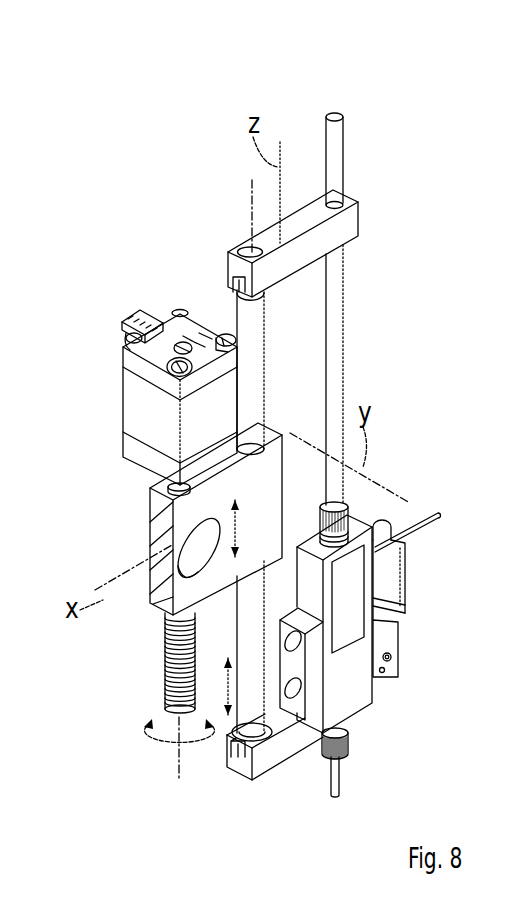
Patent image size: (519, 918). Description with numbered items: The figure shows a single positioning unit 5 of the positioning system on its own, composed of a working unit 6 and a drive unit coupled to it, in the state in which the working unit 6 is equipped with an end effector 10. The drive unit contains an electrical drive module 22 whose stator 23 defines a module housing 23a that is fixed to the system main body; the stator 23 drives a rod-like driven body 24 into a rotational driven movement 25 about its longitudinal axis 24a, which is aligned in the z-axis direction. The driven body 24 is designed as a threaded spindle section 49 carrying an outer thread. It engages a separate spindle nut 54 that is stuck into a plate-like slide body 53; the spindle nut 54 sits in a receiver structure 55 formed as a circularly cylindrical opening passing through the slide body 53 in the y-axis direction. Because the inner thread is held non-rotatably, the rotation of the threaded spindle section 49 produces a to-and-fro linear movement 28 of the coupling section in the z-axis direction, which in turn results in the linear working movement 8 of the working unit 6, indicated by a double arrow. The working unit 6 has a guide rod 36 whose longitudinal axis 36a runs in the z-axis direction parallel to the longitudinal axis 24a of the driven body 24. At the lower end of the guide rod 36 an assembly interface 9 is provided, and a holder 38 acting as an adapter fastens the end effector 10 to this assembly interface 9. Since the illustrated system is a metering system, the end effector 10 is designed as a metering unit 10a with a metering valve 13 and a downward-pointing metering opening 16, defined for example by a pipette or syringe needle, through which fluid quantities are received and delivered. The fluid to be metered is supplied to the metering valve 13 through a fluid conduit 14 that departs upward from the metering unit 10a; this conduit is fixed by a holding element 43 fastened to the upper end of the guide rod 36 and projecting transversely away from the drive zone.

The holding element 43 is at (343, 228).
The fluid conduit 14 is at (345, 343).
The guide rod 36 is at (265, 693).
The longitudinal axis 36a is at (250, 198).
The stator 23 is at (137, 398).
The module housing 23a is at (177, 313).
The drive module 22 is at (120, 457).
The slide body 53 is at (273, 463).
The linear movement 28 is at (245, 528).
The spindle nut 54 is at (196, 540).
The receiver structure 55 is at (177, 568).
The driven body 24 is at (156, 639).
The working movement 8 is at (228, 682).
The threaded spindle section 49 is at (163, 688).
The driven movement 25 is at (148, 738).
The longitudinal axis 24a is at (180, 770).
The holder 38 is at (302, 740).
The assembly interface 9 is at (243, 757).
The positioning unit 5 is at (385, 716).
The end effector 10 is at (364, 686).
The metering unit 10a is at (348, 599).
The metering valve 13 is at (387, 628).
The working unit 6 is at (377, 504).
The metering opening 16 is at (337, 780).